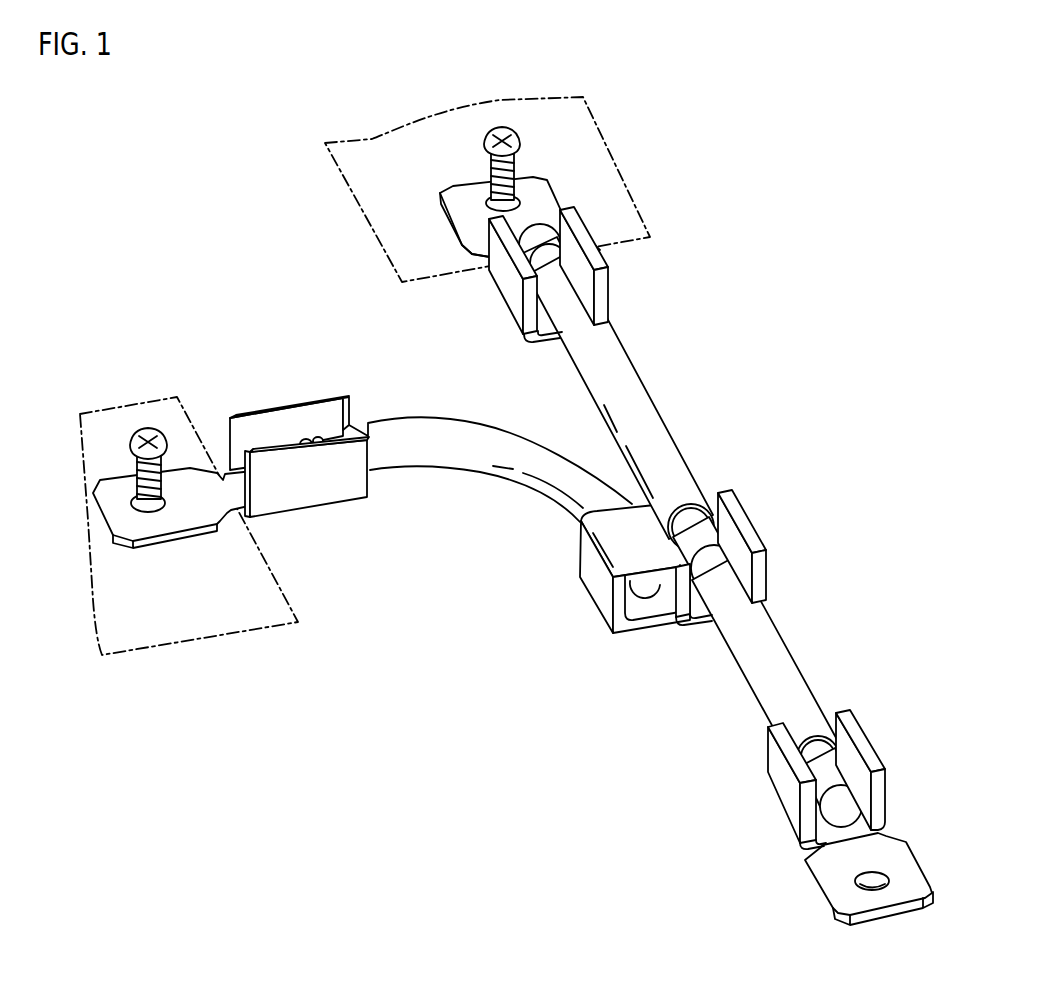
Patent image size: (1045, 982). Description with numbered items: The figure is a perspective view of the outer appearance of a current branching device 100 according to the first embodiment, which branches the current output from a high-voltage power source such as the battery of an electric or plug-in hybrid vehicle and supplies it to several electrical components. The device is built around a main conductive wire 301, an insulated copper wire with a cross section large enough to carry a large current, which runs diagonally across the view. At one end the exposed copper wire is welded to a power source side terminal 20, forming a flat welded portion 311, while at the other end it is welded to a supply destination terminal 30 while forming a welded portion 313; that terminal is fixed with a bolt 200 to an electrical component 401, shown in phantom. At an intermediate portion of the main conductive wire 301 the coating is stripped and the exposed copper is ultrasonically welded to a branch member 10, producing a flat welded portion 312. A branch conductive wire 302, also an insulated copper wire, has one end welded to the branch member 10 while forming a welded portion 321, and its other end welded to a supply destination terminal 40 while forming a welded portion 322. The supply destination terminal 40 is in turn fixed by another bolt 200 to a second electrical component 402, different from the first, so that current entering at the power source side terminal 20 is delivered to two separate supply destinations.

The current branching device 100 is at (513, 529).
The branch member 10 is at (687, 522).
The power source side terminal 20 is at (817, 897).
The supply destination terminal 30 is at (548, 183).
The supply destination terminal 40 is at (177, 540).
The bolt 200 is at (520, 141).
The main conductive wire 301 is at (765, 638).
The branch conductive wire 302 is at (452, 427).
The welded portion 311 is at (827, 782).
The welded portion 312 is at (715, 547).
The welded portion 313 is at (563, 248).
The welded portion 321 is at (647, 593).
The welded portion 322 is at (287, 441).
The electrical component 401 is at (376, 231).
The electrical component 402 is at (280, 583).